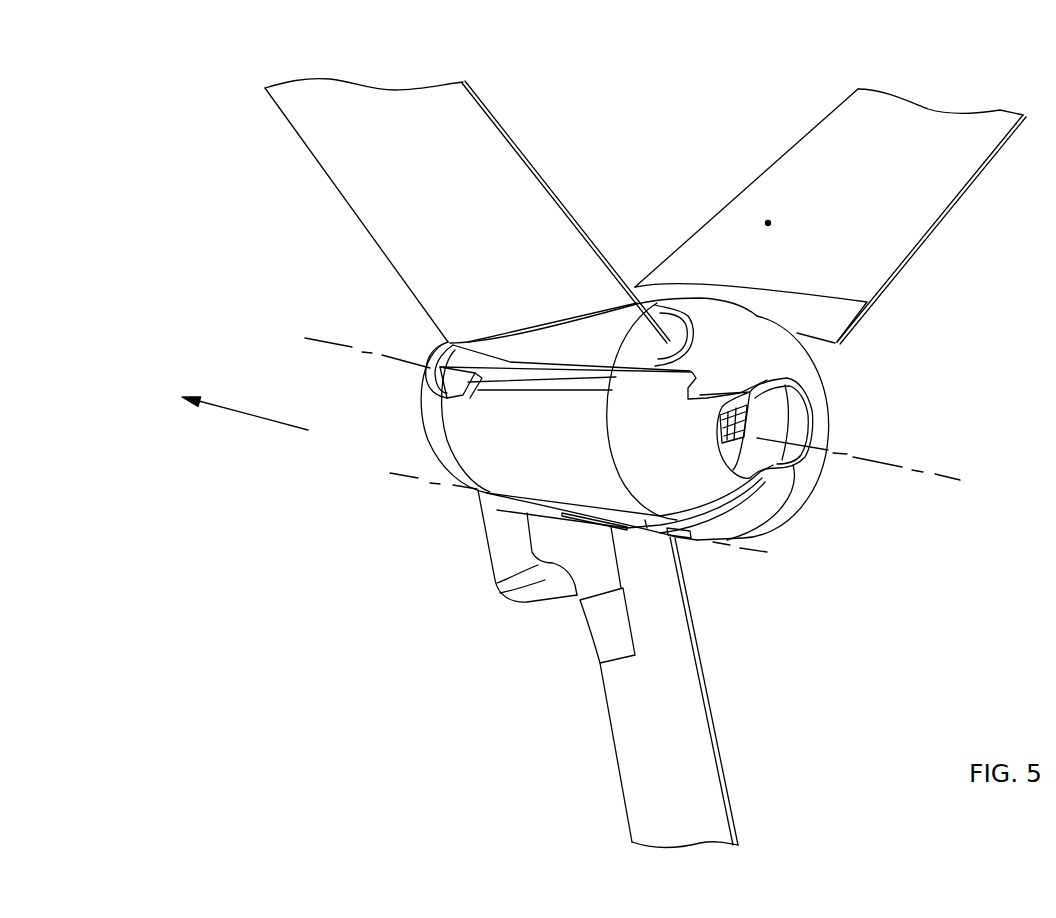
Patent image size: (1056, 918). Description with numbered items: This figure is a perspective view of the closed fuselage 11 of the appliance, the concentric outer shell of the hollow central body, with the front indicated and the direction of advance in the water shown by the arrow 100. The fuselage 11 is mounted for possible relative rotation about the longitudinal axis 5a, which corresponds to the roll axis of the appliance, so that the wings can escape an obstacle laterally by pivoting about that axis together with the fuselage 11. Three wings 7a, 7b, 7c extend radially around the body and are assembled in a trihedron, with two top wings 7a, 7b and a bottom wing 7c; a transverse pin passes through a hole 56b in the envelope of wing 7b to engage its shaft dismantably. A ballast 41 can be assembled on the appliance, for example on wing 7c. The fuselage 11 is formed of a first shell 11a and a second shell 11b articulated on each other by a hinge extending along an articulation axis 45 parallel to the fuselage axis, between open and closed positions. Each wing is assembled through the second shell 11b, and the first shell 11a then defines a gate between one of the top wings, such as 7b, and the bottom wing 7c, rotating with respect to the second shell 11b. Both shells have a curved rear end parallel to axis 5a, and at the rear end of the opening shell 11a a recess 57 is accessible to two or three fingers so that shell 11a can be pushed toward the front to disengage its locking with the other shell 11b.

The arrow 100 is at (277, 422).
The fuselage 11 is at (832, 369).
The first shell 11a is at (467, 438).
The second shell 11b is at (700, 318).
The wing 7a is at (462, 150).
The wing 7b is at (822, 143).
The wing 7c is at (702, 767).
The longitudinal axis 5a is at (333, 342).
The hole 56b is at (768, 223).
The recess 57 is at (730, 449).
The articulation axis 45 is at (390, 473).
The ballast 41 is at (512, 552).